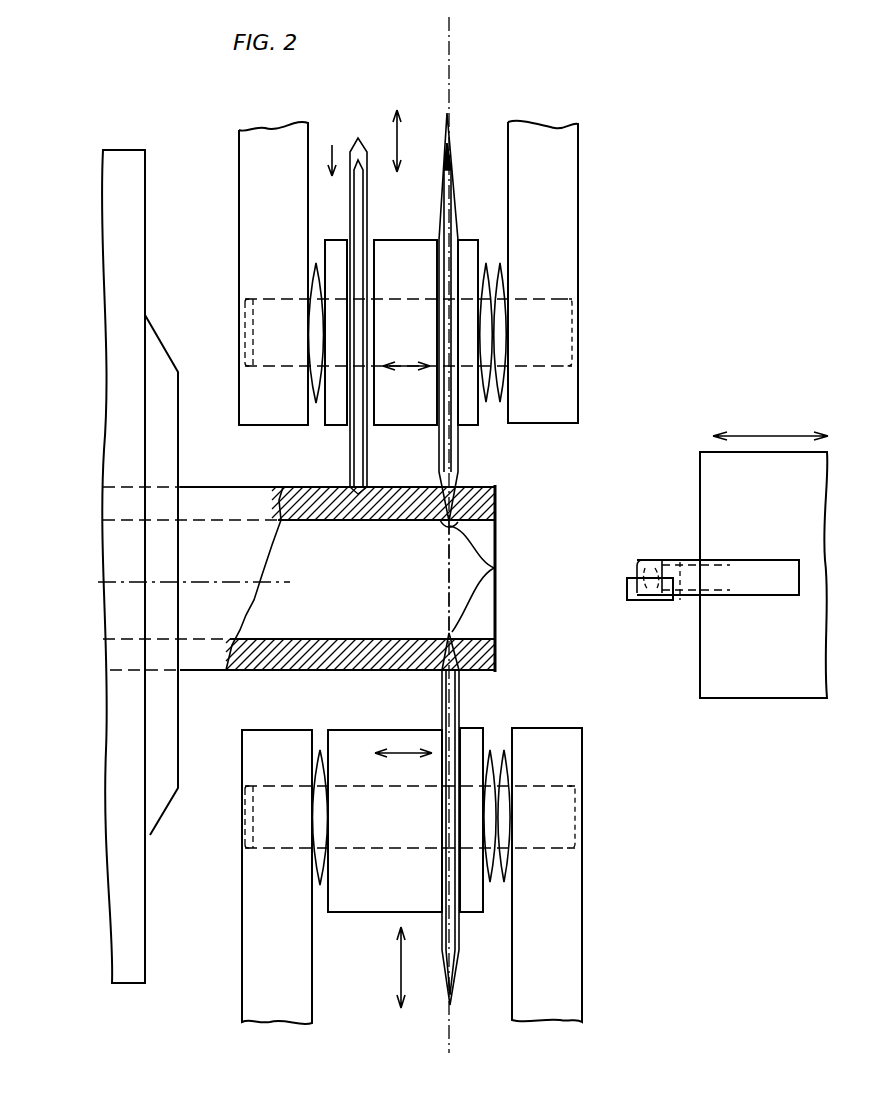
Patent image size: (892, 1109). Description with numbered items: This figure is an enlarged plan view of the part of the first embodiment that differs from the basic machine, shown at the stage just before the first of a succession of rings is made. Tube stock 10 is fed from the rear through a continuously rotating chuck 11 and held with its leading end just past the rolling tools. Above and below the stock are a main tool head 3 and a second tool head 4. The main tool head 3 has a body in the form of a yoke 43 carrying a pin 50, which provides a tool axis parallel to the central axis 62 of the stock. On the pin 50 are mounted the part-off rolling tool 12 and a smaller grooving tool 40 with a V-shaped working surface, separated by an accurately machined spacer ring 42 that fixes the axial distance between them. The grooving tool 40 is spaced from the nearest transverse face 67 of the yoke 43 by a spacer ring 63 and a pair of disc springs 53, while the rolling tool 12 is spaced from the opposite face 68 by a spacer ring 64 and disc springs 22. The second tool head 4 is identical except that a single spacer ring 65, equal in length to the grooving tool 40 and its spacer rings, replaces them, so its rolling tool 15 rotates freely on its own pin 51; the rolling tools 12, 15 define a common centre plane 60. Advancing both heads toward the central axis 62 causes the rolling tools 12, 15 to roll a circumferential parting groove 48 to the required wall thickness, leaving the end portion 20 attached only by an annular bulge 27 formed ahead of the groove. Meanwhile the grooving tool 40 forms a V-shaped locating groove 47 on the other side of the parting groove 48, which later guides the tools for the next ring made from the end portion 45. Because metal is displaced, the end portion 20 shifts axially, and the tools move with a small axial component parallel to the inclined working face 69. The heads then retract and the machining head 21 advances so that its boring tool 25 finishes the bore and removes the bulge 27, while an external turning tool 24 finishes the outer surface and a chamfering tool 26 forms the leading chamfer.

The main tool head 3 is at (324, 161).
The second tool head 4 is at (336, 965).
The tube stock 10 is at (206, 486).
The chuck 11 is at (146, 212).
The part-off rolling tool 12 is at (459, 442).
The rolling tool 15 is at (460, 697).
The end portion 20 is at (497, 652).
The machining head 21 is at (773, 527).
The disc springs 22 is at (495, 266).
The external turning tool 24 is at (636, 575).
The boring tool 25 is at (652, 560).
The chamfering tool 26 is at (680, 600).
The annular bulge 27 is at (496, 568).
The grooving tool 40 is at (368, 210).
The spacer ring 42 is at (420, 240).
The yoke 43 is at (556, 268).
The end portion 45 is at (397, 486).
The locating groove 47 is at (374, 671).
The parting groove 48 is at (428, 508).
The pin 50 is at (580, 326).
The pin 51 is at (582, 800).
The disc springs 53 is at (314, 284).
The common centre plane 60 is at (448, 558).
The central axis 62 is at (198, 583).
The spacer ring 63 is at (340, 239).
The spacer ring 64 is at (475, 239).
The spacer ring 65 is at (406, 866).
The transverse face 67 is at (308, 156).
The transverse face 68 is at (508, 158).
The inclined working face 69 is at (447, 385).